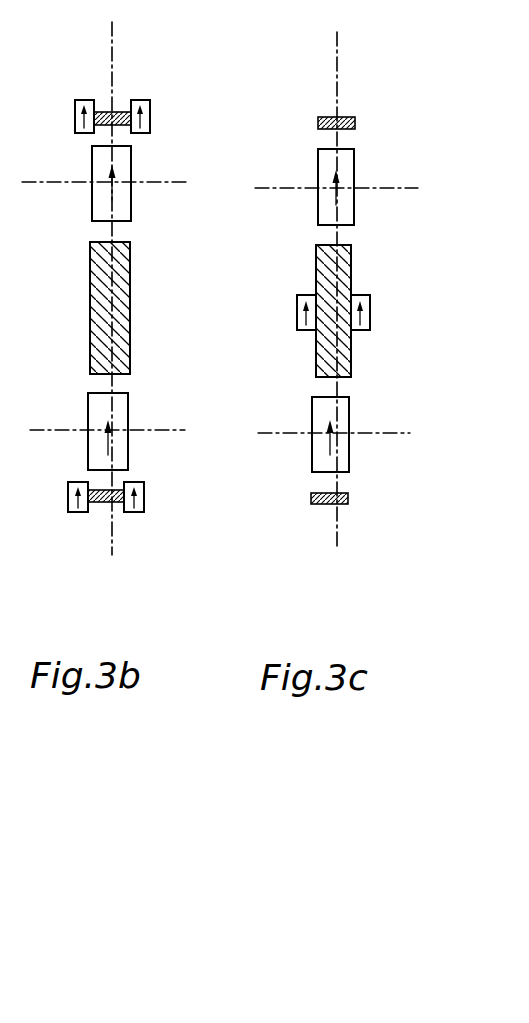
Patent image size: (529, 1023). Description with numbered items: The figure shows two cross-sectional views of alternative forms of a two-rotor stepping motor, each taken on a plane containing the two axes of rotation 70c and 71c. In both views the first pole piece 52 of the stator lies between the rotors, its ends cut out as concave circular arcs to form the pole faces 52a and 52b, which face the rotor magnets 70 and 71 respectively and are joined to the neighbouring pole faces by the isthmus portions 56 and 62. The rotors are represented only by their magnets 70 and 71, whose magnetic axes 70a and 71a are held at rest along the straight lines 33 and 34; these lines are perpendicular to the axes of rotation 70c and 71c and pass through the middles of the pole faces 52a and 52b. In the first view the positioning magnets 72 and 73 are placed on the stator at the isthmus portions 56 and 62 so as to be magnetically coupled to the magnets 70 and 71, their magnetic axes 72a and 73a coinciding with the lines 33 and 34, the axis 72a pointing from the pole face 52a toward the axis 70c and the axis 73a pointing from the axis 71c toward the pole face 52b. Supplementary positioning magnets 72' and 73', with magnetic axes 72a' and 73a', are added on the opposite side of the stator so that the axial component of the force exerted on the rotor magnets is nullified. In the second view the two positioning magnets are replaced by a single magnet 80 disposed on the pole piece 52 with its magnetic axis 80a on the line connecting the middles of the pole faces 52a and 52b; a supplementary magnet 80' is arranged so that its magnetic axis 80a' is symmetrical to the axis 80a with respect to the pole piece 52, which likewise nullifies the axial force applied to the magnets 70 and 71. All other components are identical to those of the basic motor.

In FIG. 3B, the straight line 33 is at (112, 45).
In FIG. 3C, the straight line 33 is at (337, 55).
In FIG. 3B, the straight line 34 is at (100, 535).
In FIG. 3C, the straight line 34 is at (325, 525).
In FIG. 3B, the first pole piece 52 is at (120, 330).
In FIG. 3C, the first pole piece 52 is at (345, 265).
In FIG. 3B, the pole face 52a is at (112, 243).
In FIG. 3C, the pole face 52a is at (316, 248).
In FIG. 3B, the pole face 52b is at (112, 374).
In FIG. 3C, the pole face 52b is at (335, 377).
In FIG. 3B, the isthmus portion 56 is at (117, 113).
In FIG. 3C, the isthmus portion 56 is at (345, 117).
In FIG. 3B, the isthmus portion 62 is at (113, 503).
In FIG. 3C, the isthmus portion 62 is at (348, 498).
In FIG. 3B, the magnet 70 is at (125, 210).
In FIG. 3C, the magnet 70 is at (345, 213).
In FIG. 3B, the magnetic axis 70a is at (112, 188).
In FIG. 3C, the magnetic axis 70a is at (337, 192).
In FIG. 3B, the axis of rotation 70c is at (160, 182).
In FIG. 3C, the axis of rotation 70c is at (383, 188).
In FIG. 3B, the magnet 71 is at (117, 410).
In FIG. 3C, the magnet 71 is at (340, 415).
In FIG. 3B, the magnetic axis 71a is at (108, 435).
In FIG. 3C, the magnetic axis 71a is at (325, 440).
In FIG. 3B, the axis of rotation 71c is at (155, 432).
In FIG. 3C, the axis of rotation 71c is at (375, 435).
In FIG. 3B, the positioning magnet 72 is at (59, 101).
In FIG. 3B, the supplementary positioning magnet 72' is at (174, 101).
In FIG. 3B, the magnetic axis 72a is at (43, 117).
In FIG. 3B, the magnetic axis 72a' is at (191, 117).
In FIG. 3B, the positioning magnet 73 is at (50, 517).
In FIG. 3B, the supplementary positioning magnet 73' is at (168, 518).
In FIG. 3B, the magnetic axis 73a is at (38, 502).
In FIG. 3B, the magnetic axis 73a' is at (185, 502).
In FIG. 3C, the single magnet 80 is at (277, 296).
In FIG. 3C, the supplementary magnet 80' is at (393, 306).
In FIG. 3C, the magnetic axis 80a is at (266, 315).
In FIG. 3C, the magnetic axis 80a' is at (408, 325).